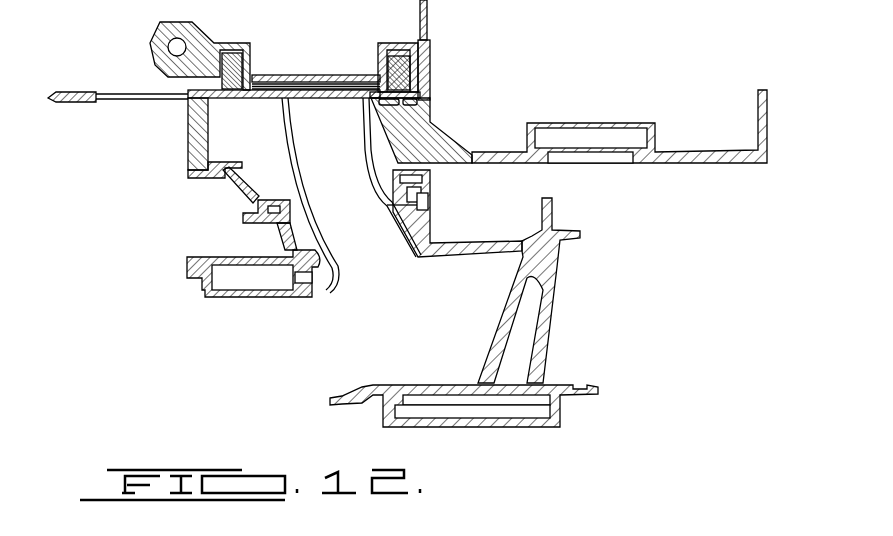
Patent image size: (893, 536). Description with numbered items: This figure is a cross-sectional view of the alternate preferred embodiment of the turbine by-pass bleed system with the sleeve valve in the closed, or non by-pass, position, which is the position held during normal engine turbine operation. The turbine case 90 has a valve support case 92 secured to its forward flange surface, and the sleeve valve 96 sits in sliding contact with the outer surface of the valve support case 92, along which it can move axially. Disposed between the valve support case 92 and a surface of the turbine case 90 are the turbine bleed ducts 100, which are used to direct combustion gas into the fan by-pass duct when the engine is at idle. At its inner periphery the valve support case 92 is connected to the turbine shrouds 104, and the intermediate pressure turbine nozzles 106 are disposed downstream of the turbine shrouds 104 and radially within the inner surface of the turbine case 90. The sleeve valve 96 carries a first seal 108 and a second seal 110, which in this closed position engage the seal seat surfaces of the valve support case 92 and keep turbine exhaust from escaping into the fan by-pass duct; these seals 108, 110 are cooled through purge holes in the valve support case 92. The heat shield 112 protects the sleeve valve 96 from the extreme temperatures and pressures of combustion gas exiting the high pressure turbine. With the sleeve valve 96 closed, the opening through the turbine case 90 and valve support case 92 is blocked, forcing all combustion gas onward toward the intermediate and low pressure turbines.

The turbine case 90 is at (413, 137).
The valve support case 92 is at (77, 92).
The sleeve valve 96 is at (328, 78).
The turbine bleed ducts 100 is at (388, 204).
The turbine shrouds 104 is at (250, 297).
The intermediate pressure turbine nozzles 106 is at (482, 385).
The first seal 108 is at (247, 62).
The second seal 110 is at (404, 62).
The heat shield 112 is at (318, 88).